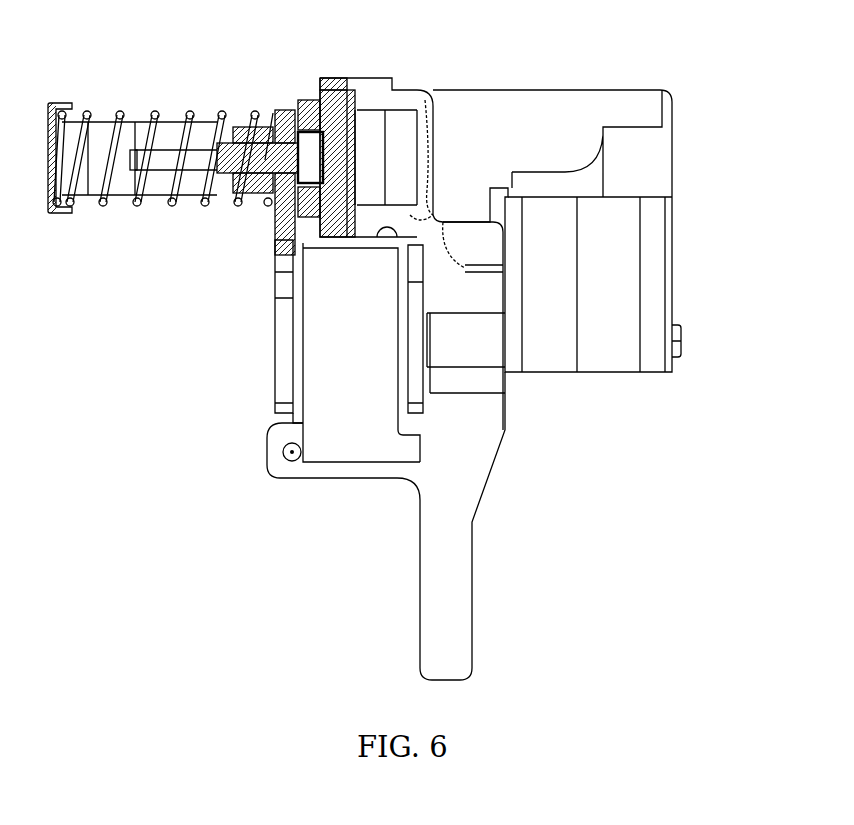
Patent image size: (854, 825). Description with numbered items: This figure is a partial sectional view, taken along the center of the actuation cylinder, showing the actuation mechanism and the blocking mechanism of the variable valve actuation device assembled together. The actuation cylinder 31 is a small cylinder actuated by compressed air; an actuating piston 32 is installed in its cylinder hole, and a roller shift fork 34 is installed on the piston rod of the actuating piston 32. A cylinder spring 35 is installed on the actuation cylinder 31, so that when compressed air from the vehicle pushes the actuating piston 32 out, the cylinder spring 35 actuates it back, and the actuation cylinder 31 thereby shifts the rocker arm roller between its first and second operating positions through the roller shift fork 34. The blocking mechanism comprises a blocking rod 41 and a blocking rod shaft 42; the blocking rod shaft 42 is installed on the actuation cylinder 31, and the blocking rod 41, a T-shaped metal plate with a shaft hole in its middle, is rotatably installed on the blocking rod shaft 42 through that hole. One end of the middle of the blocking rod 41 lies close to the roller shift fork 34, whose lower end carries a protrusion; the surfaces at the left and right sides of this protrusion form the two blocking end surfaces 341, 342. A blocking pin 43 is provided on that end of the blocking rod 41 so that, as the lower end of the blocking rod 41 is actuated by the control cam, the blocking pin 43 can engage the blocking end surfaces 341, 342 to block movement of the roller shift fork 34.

The actuation cylinder 31 is at (600, 110).
The actuating piston 32 is at (350, 117).
The roller shift fork 34 is at (335, 335).
The blocking end surface 341 is at (305, 438).
The blocking end surface 342 is at (418, 450).
The cylinder spring 35 is at (222, 114).
The blocking rod 41 is at (446, 519).
The blocking rod shaft 42 is at (681, 340).
The blocking pin 43 is at (286, 458).